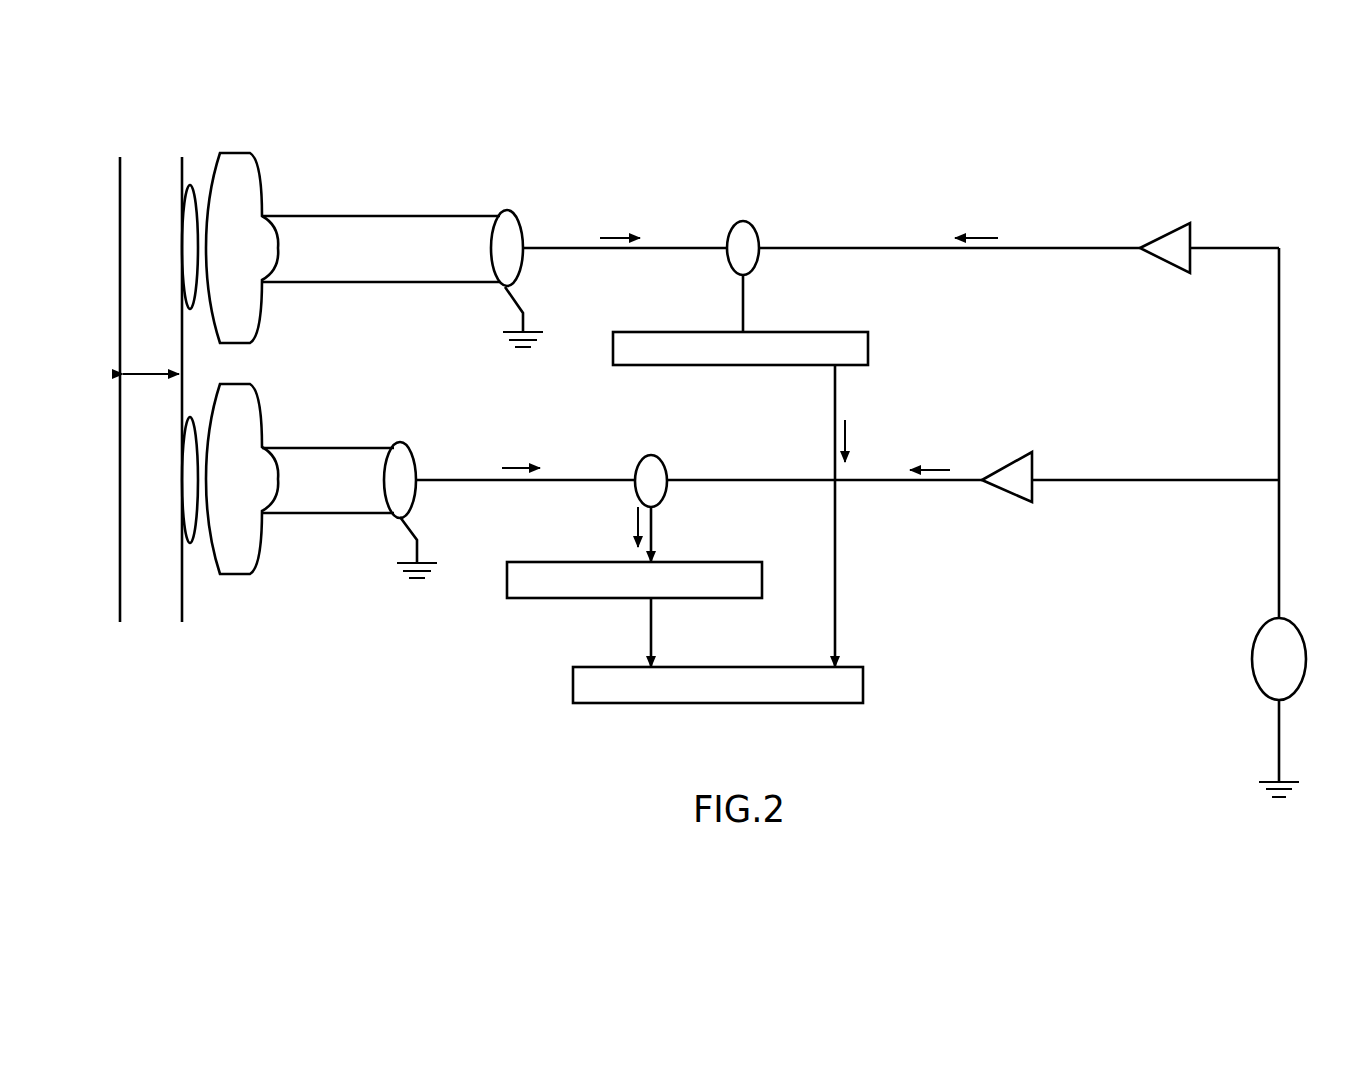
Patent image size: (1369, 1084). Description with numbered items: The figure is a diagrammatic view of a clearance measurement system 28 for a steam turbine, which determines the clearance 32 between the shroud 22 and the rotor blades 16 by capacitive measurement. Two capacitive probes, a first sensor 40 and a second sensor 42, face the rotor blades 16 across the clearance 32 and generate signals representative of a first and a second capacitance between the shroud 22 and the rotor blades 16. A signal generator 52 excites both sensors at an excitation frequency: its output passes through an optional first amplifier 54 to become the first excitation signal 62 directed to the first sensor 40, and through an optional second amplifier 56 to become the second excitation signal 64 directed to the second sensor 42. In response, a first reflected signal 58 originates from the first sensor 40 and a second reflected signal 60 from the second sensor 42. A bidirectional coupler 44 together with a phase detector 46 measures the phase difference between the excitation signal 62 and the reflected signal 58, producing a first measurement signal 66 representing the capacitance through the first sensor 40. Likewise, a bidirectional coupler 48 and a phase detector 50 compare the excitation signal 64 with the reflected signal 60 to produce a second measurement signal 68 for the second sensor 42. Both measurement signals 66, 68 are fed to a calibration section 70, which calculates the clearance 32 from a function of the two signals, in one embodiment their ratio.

The rotor blades 16 is at (182, 608).
The shroud 22 is at (120, 608).
The clearance measurement system 28 is at (170, 807).
The clearance 32 is at (143, 367).
The first sensor 40 is at (366, 216).
The second sensor 42 is at (325, 448).
The bidirectional coupler 44 is at (748, 232).
The phase detector 46 is at (868, 350).
The bidirectional coupler 48 is at (655, 465).
The phase detector 50 is at (762, 580).
The signal generator 52 is at (1307, 660).
The first amplifier 54 is at (1167, 230).
The second amplifier 56 is at (1010, 460).
The first reflected signal 58 is at (608, 238).
The second reflected signal 60 is at (512, 468).
The first excitation signal 62 is at (988, 238).
The second excitation signal 64 is at (938, 470).
The first measurement signal 66 is at (848, 432).
The second measurement signal 68 is at (632, 522).
The calibration section 70 is at (863, 685).